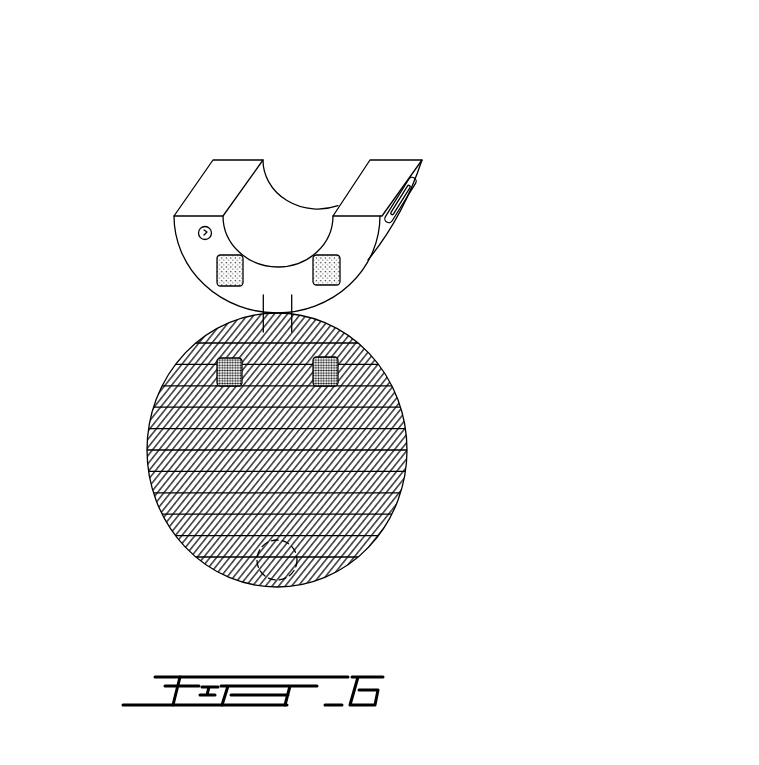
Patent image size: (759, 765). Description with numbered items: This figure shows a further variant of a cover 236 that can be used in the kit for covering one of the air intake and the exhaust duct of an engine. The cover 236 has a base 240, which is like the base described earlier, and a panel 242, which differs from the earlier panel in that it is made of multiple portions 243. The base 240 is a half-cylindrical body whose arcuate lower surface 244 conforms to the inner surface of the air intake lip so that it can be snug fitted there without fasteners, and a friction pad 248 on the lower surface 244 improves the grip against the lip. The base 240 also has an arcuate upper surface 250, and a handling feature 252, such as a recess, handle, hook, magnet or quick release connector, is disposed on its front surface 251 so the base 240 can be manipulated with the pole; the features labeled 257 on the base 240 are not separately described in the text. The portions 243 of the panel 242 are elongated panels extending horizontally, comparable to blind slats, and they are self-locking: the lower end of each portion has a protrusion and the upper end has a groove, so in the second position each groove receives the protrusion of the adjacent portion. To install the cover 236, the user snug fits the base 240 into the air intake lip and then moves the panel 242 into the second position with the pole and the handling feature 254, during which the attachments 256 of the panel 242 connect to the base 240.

The cover 236 is at (622, 190).
The base 240 is at (188, 159).
The panel 242 is at (357, 460).
The portions 243 is at (375, 418).
The lower surface 244 is at (418, 172).
The pad 248 is at (398, 203).
The upper surface 250 is at (303, 222).
The front surface 251 is at (202, 262).
The handling feature 252 is at (198, 233).
The handling feature 254 is at (297, 568).
The attachments 256 is at (340, 379).
The magnet pockets 257 is at (323, 267).